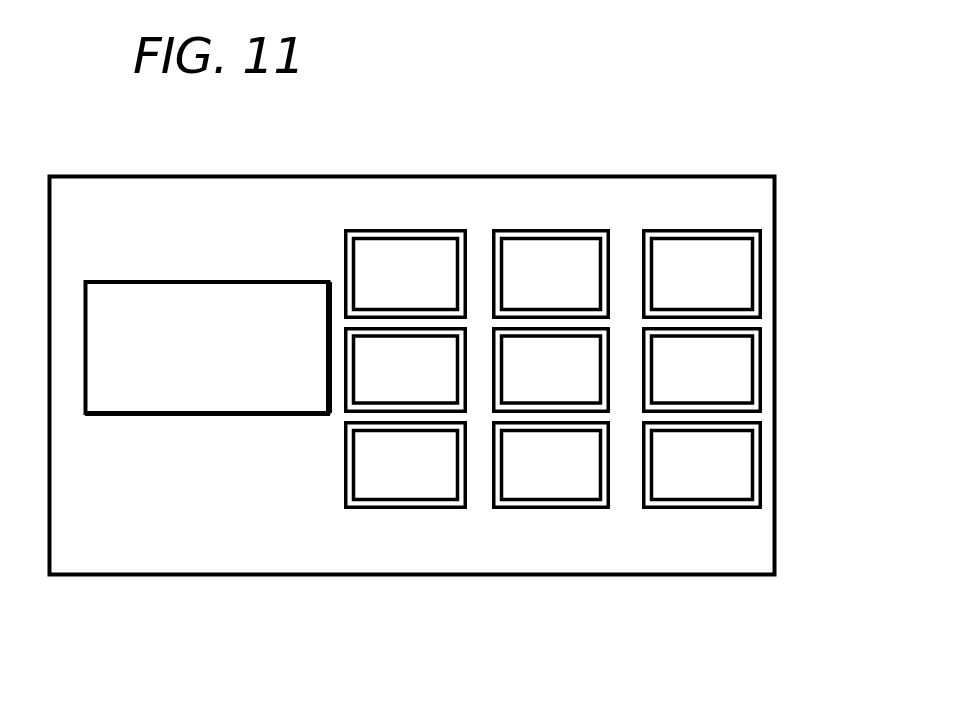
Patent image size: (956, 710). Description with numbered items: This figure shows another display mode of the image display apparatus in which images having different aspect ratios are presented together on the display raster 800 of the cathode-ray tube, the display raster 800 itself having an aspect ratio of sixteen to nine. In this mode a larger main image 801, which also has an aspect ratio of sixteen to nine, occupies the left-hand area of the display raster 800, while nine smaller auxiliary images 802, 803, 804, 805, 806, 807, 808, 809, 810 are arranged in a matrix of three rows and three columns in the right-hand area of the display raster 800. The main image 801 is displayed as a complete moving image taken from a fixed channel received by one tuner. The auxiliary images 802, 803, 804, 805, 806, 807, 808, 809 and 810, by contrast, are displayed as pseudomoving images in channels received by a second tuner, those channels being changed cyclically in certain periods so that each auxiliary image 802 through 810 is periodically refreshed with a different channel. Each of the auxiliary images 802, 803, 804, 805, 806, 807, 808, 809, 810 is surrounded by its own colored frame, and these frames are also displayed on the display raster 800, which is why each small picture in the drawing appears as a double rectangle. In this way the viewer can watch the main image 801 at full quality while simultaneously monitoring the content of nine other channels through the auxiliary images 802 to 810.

The display raster 800 is at (703, 578).
The main image 801 is at (195, 282).
The auxiliary image 802 is at (392, 229).
The auxiliary image 803 is at (530, 229).
The auxiliary image 804 is at (702, 229).
The auxiliary image 805 is at (344, 394).
The auxiliary image 806 is at (492, 387).
The auxiliary image 807 is at (762, 375).
The auxiliary image 808 is at (407, 509).
The auxiliary image 809 is at (604, 509).
The auxiliary image 810 is at (758, 473).